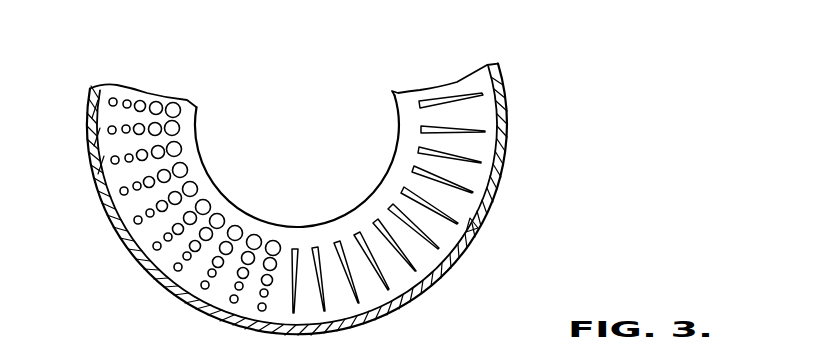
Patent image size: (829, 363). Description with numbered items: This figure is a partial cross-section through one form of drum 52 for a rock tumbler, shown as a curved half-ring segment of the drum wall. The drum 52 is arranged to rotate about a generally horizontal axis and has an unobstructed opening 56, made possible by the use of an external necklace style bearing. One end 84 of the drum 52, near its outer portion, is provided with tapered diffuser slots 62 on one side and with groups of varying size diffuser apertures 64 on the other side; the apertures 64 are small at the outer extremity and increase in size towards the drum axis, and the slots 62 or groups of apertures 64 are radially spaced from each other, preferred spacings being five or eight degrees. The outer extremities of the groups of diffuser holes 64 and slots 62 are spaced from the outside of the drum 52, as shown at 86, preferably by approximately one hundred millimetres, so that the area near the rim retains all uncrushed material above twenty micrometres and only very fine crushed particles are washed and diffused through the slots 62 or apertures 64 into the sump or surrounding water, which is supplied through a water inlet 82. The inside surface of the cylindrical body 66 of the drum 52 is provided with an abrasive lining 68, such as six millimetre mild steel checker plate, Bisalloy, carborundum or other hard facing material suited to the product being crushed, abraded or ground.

The drum 52 is at (507, 118).
The unobstructed opening 56 is at (395, 108).
The tapered diffuser slots 62 is at (457, 177).
The diffuser apertures 64 is at (230, 273).
The cylindrical body 66 is at (470, 218).
The abrasive lining 68 is at (137, 233).
The water inlet 82 is at (412, 160).
The end of drum 84 is at (390, 315).
The spacing from outside of drum 86 is at (100, 153).